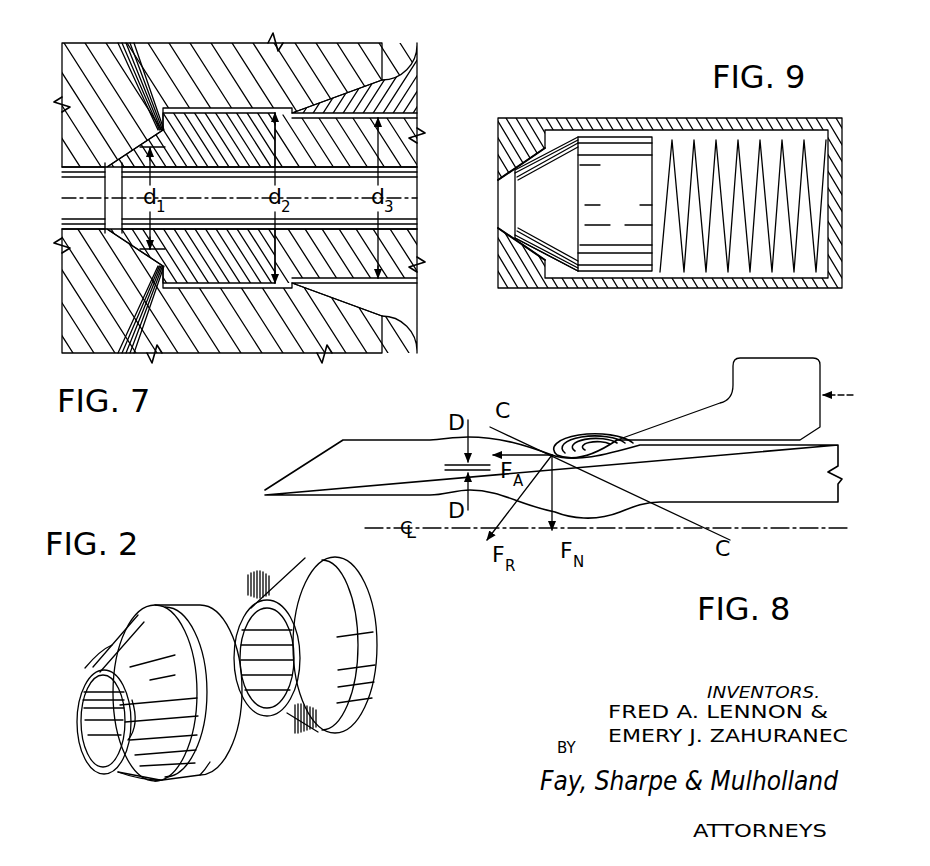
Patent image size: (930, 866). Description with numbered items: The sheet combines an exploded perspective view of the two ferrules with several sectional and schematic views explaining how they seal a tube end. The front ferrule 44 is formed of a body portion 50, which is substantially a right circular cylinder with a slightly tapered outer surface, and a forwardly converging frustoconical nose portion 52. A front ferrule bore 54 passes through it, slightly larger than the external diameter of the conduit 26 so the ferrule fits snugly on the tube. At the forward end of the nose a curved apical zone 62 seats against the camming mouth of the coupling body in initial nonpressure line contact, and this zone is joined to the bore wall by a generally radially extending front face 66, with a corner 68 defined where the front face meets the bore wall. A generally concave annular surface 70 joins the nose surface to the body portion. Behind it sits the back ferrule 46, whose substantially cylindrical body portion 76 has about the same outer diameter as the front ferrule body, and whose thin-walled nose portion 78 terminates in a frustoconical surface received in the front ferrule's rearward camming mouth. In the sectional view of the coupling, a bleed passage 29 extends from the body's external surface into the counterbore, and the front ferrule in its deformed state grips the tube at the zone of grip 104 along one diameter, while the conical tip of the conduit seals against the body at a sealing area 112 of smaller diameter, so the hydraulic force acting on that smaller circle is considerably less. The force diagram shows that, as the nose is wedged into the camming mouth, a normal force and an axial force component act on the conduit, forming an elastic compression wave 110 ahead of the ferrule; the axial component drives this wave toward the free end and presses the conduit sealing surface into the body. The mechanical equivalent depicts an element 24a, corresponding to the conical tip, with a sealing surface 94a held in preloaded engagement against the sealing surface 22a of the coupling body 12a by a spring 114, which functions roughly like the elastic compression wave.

In FIG. 7, the bleed passage 29 is at (172, 70).
In FIG. 7, the conduit 26 is at (223, 140).
In FIG. 8, the conduit 26 is at (788, 477).
In FIG. 7, the sealing area 112 is at (147, 147).
In FIG. 7, the zone of grip of the front ferrule 104 is at (293, 120).
In FIG. 9, the coupling body 12a is at (518, 140).
In FIG. 9, the sealing surface 94a is at (538, 156).
In FIG. 9, the sealing surface 22a is at (504, 183).
In FIG. 9, the element equivalent to conical tip 24a is at (558, 230).
In FIG. 9, the spring 114 is at (765, 157).
In FIG. 8, the front ferrule 44 is at (760, 373).
In FIG. 2, the front ferrule 44 is at (150, 605).
In FIG. 8, the nose portion 52 is at (662, 430).
In FIG. 2, the nose portion 52 is at (140, 752).
In FIG. 8, the elastic compression wave 110 is at (443, 450).
In FIG. 2, the back ferrule 46 is at (273, 560).
In FIG. 2, the body portion 50 is at (192, 613).
In FIG. 2, the body portion 76 is at (347, 603).
In FIG. 2, the curved apical zone 62 is at (110, 663).
In FIG. 2, the front face 66 is at (83, 677).
In FIG. 2, the front ferrule bore 54 is at (100, 733).
In FIG. 2, the corner 68 is at (130, 735).
In FIG. 2, the concave annular surface 70 is at (195, 762).
In FIG. 2, the nose portion 78 is at (305, 717).